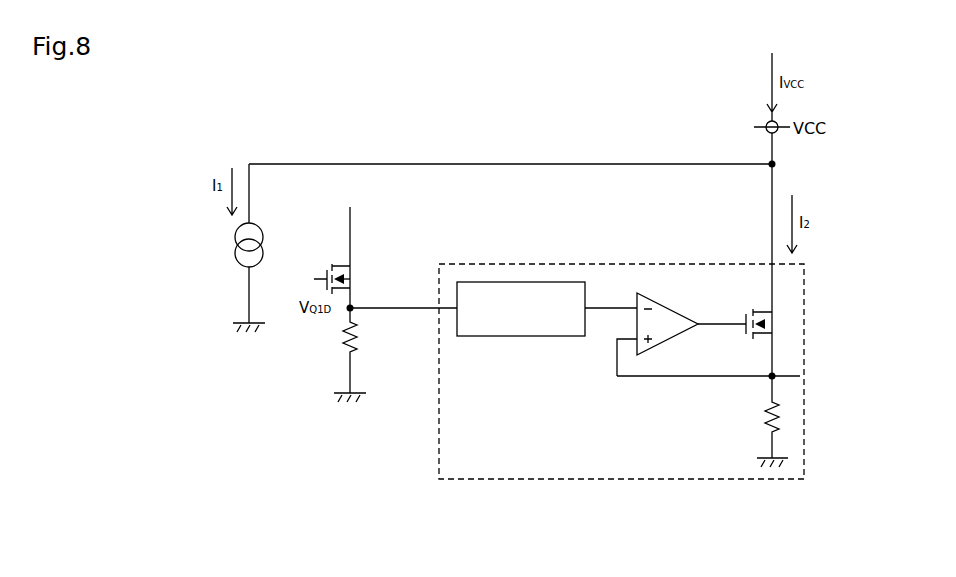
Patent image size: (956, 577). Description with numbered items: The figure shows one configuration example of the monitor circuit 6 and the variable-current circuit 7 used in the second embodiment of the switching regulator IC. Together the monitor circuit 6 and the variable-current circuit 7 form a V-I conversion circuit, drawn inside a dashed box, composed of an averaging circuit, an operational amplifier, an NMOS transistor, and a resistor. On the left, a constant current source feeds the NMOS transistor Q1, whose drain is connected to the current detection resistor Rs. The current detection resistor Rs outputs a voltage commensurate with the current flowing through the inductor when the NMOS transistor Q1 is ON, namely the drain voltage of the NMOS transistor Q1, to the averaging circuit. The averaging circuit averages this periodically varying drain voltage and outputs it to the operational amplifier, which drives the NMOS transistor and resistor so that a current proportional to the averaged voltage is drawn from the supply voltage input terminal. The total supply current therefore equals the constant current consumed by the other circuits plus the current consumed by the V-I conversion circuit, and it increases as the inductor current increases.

The monitor circuit 6 is at (621, 321).
The variable-current circuit 7 is at (692, 264).
The NMOS transistor Q1 is at (359, 277).
The current detection resistor Rs is at (359, 341).